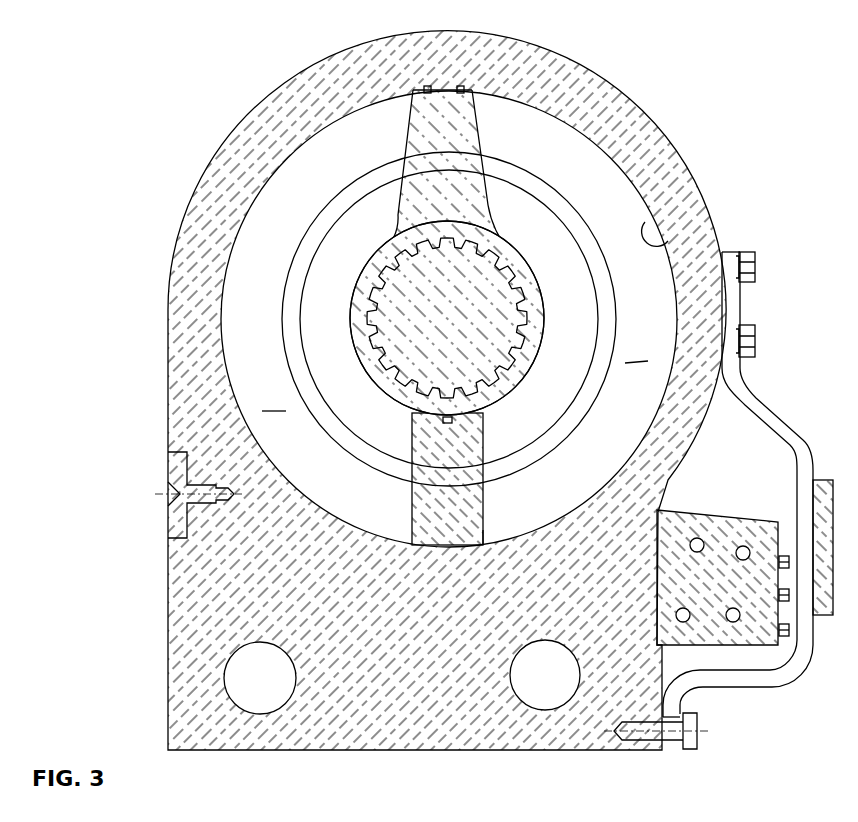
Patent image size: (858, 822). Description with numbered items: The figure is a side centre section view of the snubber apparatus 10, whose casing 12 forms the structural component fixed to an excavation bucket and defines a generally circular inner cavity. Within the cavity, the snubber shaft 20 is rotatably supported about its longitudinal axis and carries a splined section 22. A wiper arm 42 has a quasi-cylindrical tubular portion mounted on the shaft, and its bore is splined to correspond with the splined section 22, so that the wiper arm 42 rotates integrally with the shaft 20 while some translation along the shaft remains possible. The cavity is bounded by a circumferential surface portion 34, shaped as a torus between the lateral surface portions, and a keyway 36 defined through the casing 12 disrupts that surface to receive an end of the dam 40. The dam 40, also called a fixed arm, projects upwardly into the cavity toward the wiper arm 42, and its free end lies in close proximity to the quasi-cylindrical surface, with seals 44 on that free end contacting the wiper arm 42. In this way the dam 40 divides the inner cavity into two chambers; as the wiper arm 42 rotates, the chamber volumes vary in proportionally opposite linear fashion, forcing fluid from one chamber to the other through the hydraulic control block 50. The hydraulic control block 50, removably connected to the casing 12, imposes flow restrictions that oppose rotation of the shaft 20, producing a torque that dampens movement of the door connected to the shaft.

The snubber apparatus 10 is at (156, 184).
The casing 12 is at (670, 138).
The snubber shaft 20 is at (466, 327).
The splined section 22 is at (503, 270).
The circumferential surface portion 34 is at (655, 220).
The keyway 36 is at (492, 541).
The dam 40 is at (412, 493).
The wiper arm 42 is at (472, 133).
The seals 44 is at (430, 87).
The hydraulic control block 50 is at (729, 518).